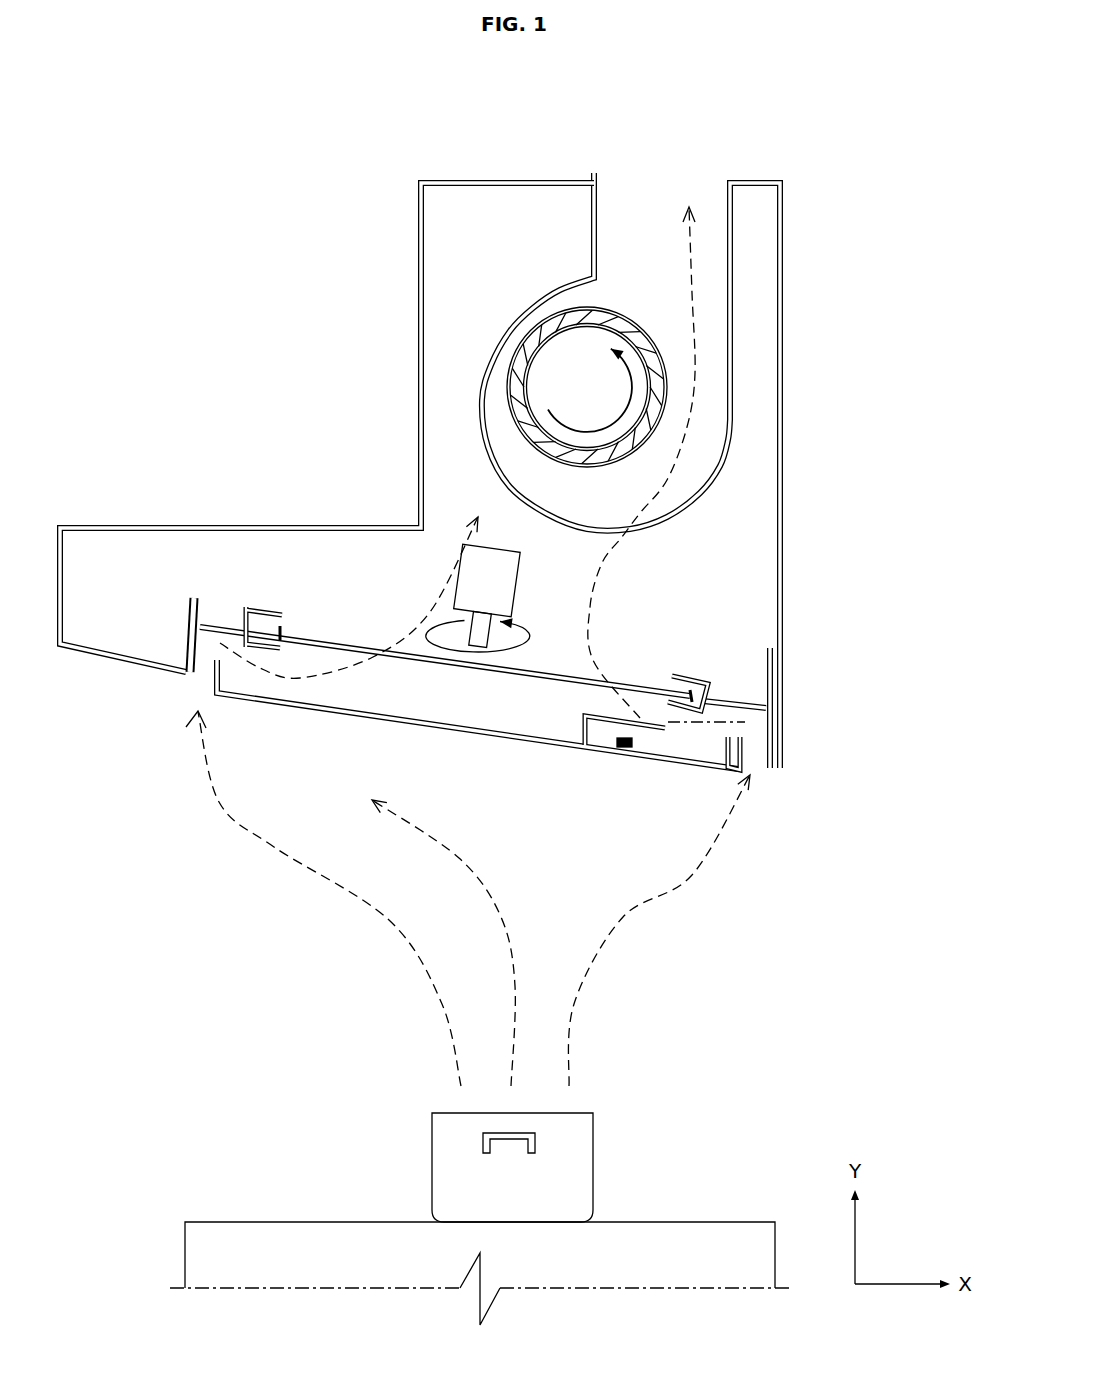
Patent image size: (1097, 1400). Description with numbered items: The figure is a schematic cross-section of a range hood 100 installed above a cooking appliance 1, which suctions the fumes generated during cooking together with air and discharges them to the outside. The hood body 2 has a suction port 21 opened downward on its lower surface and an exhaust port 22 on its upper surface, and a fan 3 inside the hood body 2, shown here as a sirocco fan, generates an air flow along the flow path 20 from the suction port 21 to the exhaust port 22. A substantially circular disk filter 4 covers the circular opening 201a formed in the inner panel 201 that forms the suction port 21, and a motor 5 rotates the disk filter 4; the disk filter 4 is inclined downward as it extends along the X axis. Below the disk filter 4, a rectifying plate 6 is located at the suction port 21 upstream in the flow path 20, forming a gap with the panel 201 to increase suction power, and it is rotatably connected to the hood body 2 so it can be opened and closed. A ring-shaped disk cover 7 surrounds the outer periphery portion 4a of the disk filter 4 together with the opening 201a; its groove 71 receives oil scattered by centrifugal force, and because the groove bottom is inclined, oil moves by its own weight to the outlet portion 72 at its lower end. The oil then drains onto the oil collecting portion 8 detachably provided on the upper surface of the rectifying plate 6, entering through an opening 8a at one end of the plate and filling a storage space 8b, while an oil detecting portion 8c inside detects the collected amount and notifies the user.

The range hood 100 is at (190, 147).
The cooking appliance 1 is at (583, 1260).
The hood body 2 is at (418, 323).
The flow path 20 is at (625, 558).
The inner panel 201 is at (196, 630).
The opening 201a is at (324, 622).
The suction port 21 is at (188, 690).
The exhaust port 22 is at (662, 168).
The fan 3 is at (605, 312).
The disk filter 4 is at (440, 662).
The outer periphery portion 4a is at (258, 629).
The motor 5 is at (512, 586).
The rectifying plate 6 is at (456, 737).
The disk cover 7 is at (256, 650).
The ring-shaped groove 71 is at (246, 609).
The outlet portion 72 is at (695, 714).
The oil collecting portion 8 is at (582, 735).
The opening 8a is at (722, 742).
The storage space 8b is at (604, 734).
The oil detecting portion 8c is at (626, 758).